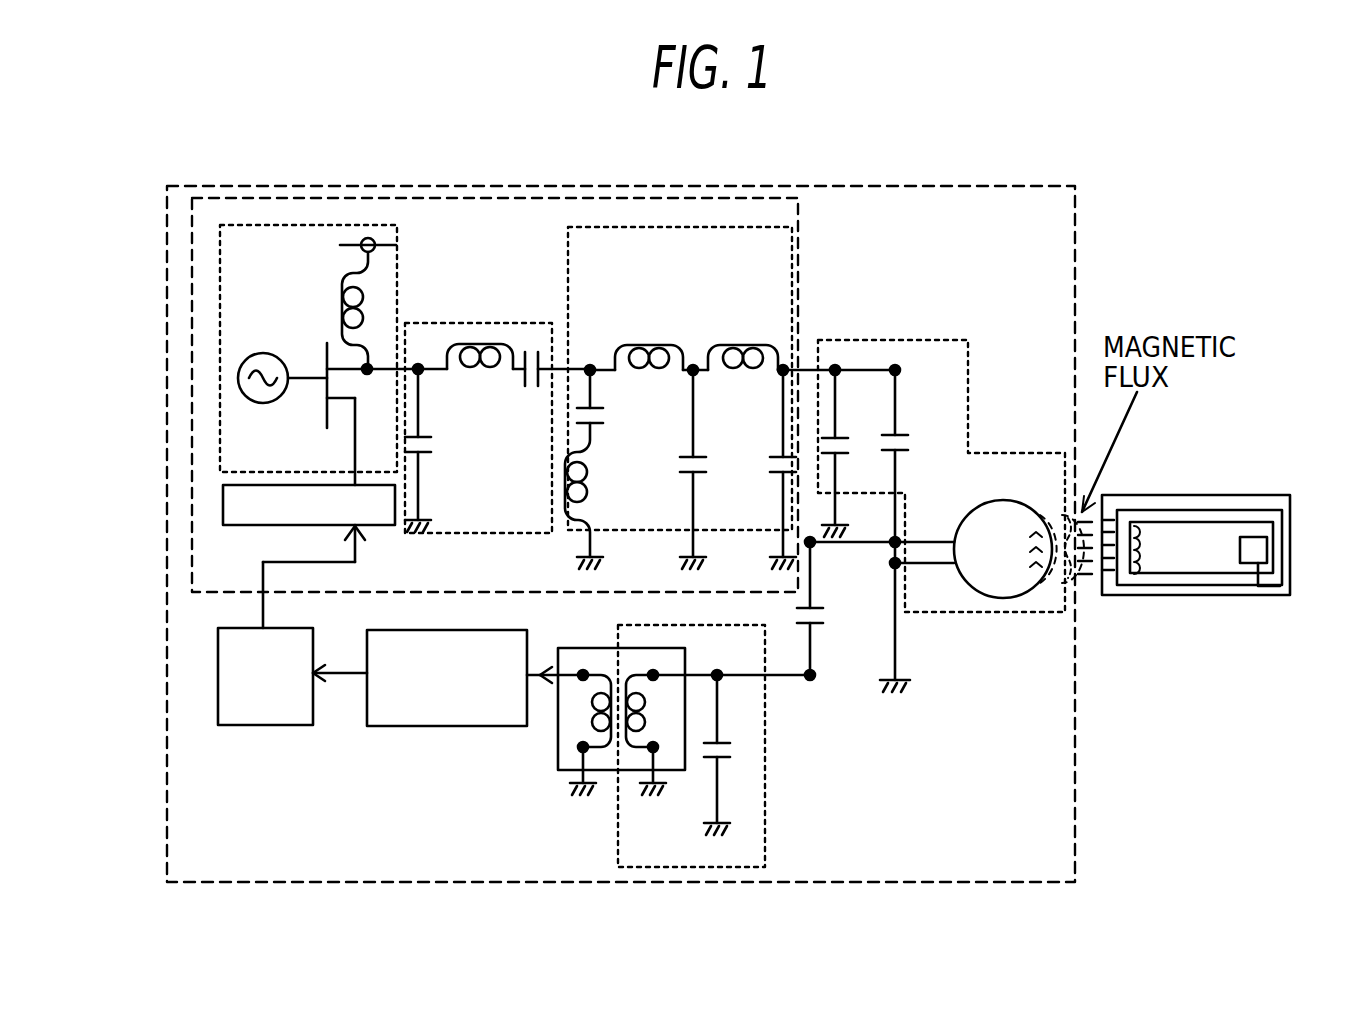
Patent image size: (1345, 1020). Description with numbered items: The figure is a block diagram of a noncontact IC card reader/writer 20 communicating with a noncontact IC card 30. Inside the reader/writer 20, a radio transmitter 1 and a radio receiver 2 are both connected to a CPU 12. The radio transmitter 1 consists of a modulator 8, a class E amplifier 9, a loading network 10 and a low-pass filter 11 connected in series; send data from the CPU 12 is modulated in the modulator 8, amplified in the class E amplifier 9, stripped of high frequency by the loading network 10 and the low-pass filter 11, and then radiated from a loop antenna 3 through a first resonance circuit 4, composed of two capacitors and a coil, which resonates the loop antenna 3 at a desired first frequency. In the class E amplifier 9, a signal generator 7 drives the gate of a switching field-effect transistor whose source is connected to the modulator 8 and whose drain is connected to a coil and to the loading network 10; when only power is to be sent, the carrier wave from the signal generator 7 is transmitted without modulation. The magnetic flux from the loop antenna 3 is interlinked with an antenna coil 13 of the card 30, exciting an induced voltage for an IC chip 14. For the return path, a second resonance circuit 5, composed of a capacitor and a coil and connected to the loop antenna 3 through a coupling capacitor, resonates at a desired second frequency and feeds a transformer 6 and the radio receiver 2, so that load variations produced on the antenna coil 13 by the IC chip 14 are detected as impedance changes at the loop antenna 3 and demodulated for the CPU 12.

The radio transmitter 1 is at (227, 585).
The radio receiver 2 is at (438, 727).
The loop antenna 3 is at (1003, 500).
The first resonance circuit 4 is at (860, 336).
The second resonance circuit 5 is at (762, 733).
The transformer 6 is at (568, 645).
The signal generator 7 is at (277, 369).
The modulator 8 is at (297, 556).
The class E amplifier 9 is at (328, 350).
The loading network 10 is at (553, 340).
The low-pass filter 11 is at (758, 240).
The CPU 12 is at (263, 713).
The antenna coil 13 is at (1178, 512).
The IC chip 14 is at (1254, 550).
The noncontact IC card reader/writer 20 is at (1075, 836).
The noncontact IC card 30 is at (1220, 553).